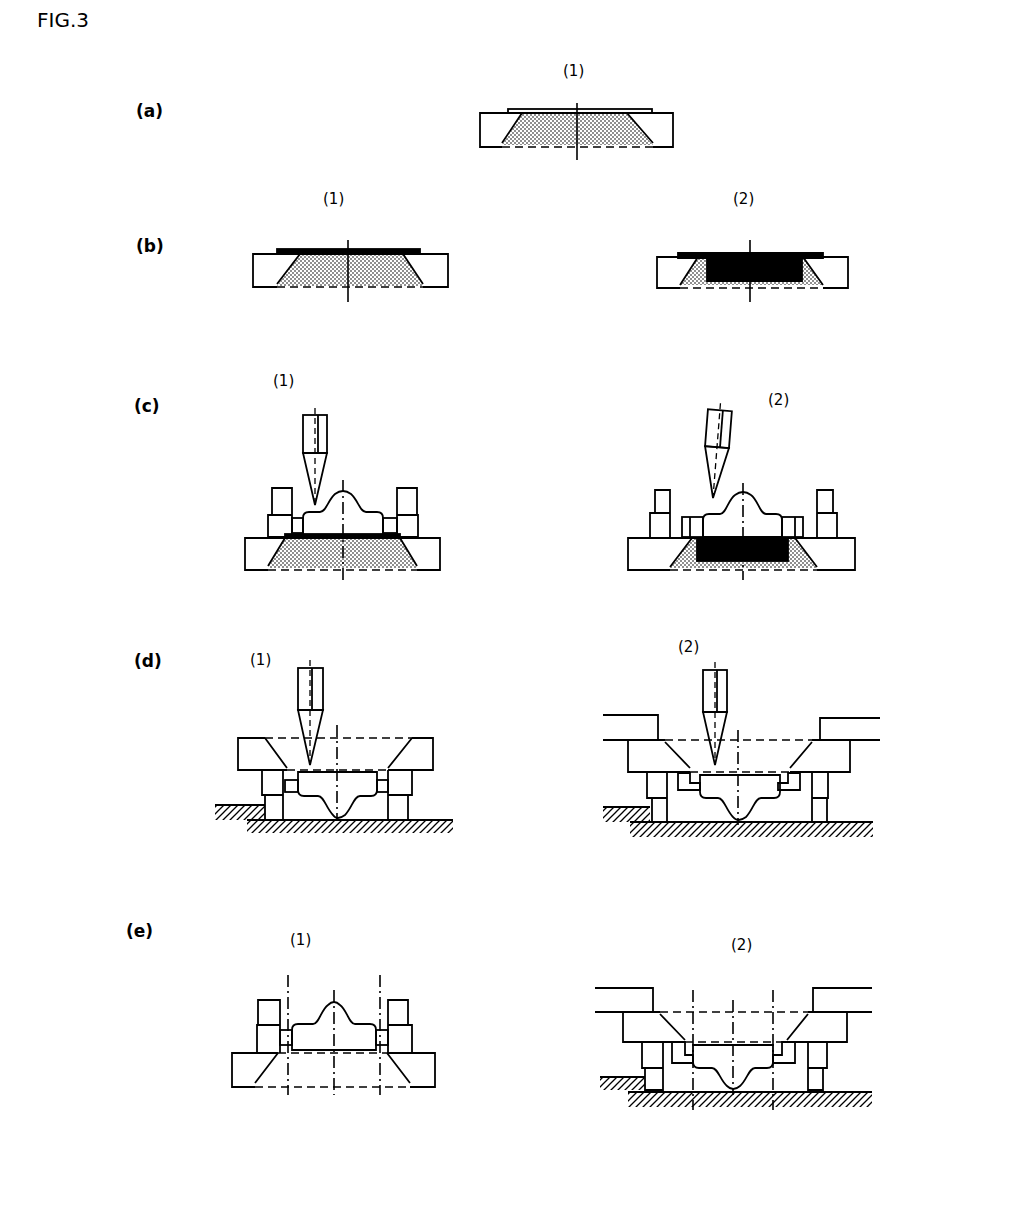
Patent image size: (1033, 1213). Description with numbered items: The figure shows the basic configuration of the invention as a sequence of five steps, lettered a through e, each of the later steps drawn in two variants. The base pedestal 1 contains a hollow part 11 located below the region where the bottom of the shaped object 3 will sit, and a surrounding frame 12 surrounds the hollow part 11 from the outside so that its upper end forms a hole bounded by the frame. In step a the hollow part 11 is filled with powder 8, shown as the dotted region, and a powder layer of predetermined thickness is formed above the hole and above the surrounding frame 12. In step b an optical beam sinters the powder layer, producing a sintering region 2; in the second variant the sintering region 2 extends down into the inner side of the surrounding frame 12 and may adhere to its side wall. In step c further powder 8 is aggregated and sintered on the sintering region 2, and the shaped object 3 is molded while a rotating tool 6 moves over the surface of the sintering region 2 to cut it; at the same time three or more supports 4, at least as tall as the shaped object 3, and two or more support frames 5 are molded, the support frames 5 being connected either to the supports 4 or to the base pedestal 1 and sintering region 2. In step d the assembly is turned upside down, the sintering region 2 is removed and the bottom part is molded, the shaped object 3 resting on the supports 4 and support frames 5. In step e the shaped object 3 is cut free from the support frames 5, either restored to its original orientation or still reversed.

The base pedestal 1 is at (660, 125).
The sintering region 2 is at (305, 252).
The shaped object 3 is at (348, 506).
The supports 4 is at (280, 502).
The support frames 5 is at (388, 525).
The rotating tool 6 is at (318, 430).
The powder 8 is at (603, 132).
The hollow part 11 is at (523, 113).
The surrounding frame 12 is at (437, 278).